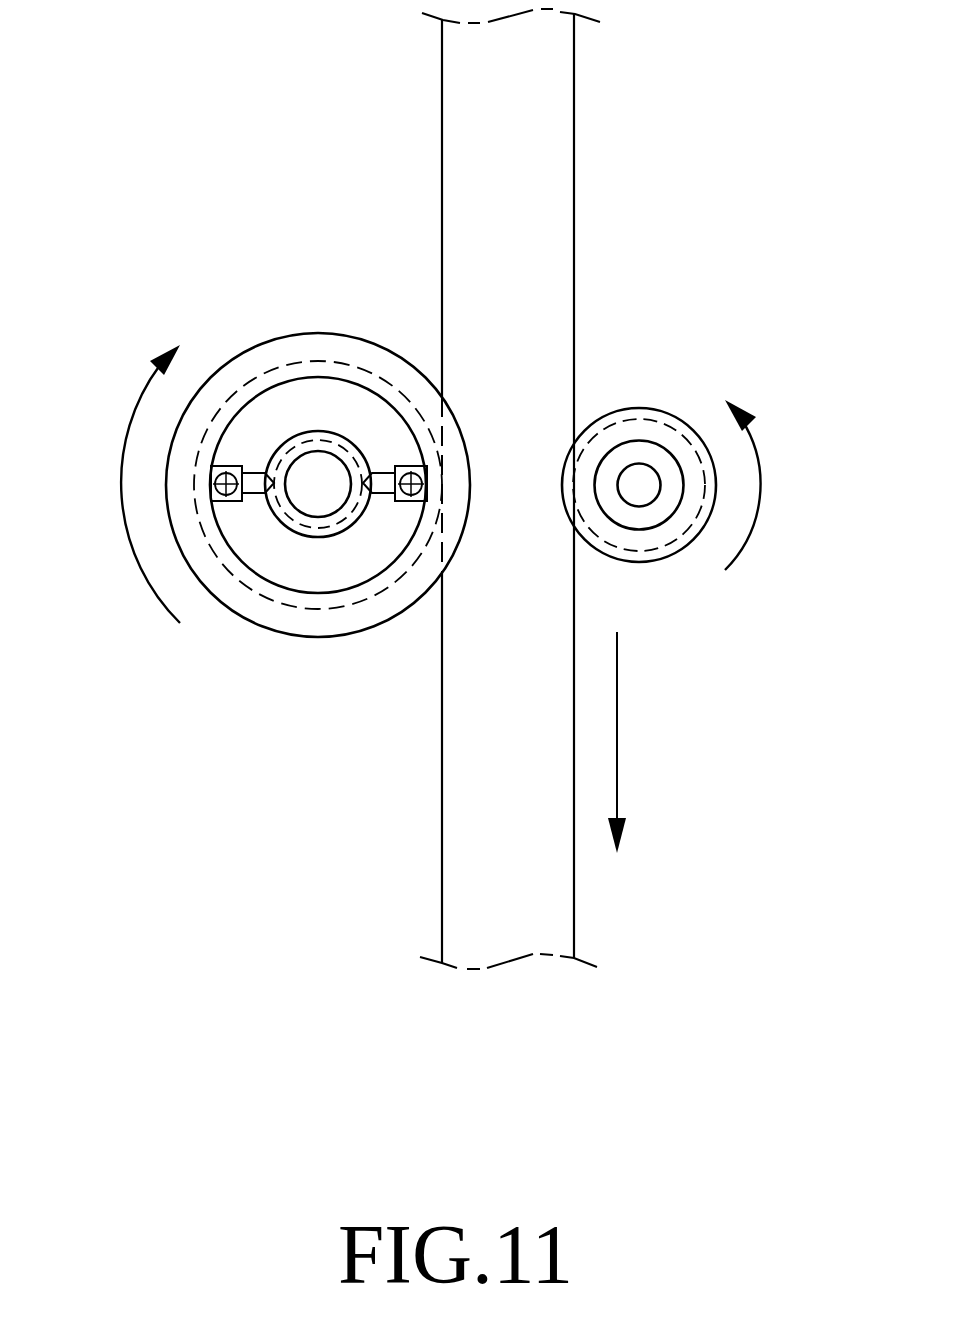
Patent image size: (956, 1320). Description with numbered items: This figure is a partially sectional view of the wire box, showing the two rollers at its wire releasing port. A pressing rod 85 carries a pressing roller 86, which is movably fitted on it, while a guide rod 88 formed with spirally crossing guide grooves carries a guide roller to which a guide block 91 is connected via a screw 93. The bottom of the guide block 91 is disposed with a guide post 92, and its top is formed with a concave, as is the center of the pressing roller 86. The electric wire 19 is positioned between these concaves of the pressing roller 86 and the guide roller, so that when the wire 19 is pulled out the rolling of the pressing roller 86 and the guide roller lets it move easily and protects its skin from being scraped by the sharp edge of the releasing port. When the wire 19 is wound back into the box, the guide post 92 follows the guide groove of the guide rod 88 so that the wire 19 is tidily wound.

The electric wire 19 is at (553, 916).
The pressing rod 85 is at (638, 473).
The pressing roller 86 is at (671, 530).
The guide rod 88 is at (314, 433).
The guide block 91 is at (265, 350).
The guide post 92 is at (257, 495).
The screw 93 is at (228, 503).